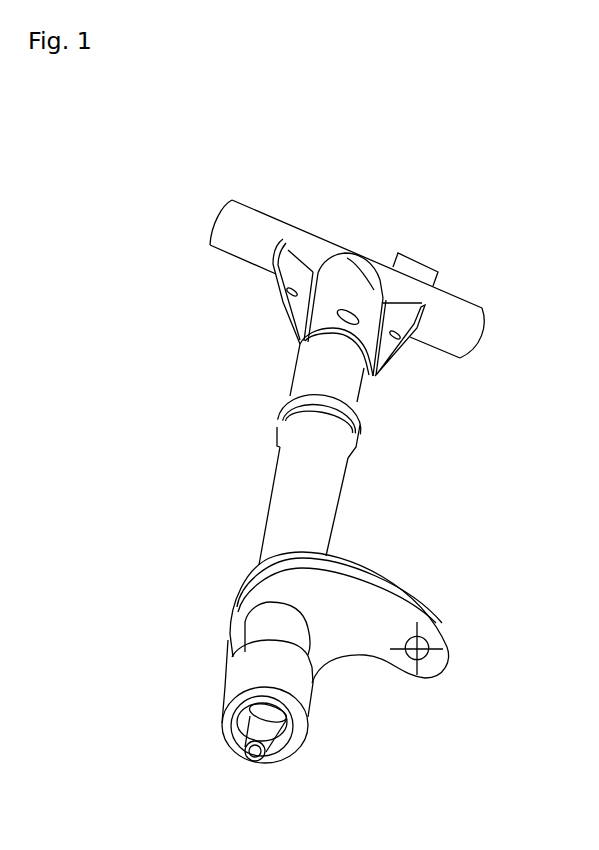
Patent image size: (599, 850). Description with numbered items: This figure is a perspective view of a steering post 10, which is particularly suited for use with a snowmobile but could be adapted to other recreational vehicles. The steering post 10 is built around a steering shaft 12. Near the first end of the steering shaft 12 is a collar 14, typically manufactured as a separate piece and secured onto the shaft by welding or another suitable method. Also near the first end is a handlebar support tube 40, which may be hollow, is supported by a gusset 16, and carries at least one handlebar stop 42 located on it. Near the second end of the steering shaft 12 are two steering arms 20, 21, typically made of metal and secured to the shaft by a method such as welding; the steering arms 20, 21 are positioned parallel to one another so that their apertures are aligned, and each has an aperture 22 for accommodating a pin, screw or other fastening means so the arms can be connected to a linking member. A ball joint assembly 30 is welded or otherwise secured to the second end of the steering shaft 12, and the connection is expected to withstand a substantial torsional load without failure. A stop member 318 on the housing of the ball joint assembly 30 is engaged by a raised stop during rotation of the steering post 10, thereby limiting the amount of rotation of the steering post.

The steering post 10 is at (362, 183).
The steering shaft 12 is at (312, 528).
The collar 14 is at (360, 427).
The gusset 16 is at (392, 362).
The steering arm 20 is at (425, 603).
The steering arm 21 is at (443, 632).
The aperture 22 is at (426, 651).
The ball joint assembly 30 is at (278, 687).
The handlebar support tube 40 is at (448, 306).
The handlebar stop 42 is at (417, 266).
The stop member 318 is at (226, 736).